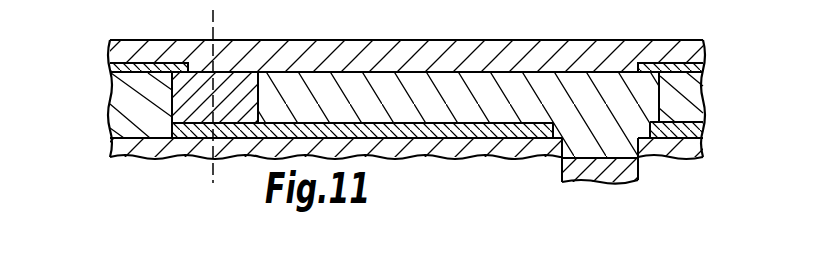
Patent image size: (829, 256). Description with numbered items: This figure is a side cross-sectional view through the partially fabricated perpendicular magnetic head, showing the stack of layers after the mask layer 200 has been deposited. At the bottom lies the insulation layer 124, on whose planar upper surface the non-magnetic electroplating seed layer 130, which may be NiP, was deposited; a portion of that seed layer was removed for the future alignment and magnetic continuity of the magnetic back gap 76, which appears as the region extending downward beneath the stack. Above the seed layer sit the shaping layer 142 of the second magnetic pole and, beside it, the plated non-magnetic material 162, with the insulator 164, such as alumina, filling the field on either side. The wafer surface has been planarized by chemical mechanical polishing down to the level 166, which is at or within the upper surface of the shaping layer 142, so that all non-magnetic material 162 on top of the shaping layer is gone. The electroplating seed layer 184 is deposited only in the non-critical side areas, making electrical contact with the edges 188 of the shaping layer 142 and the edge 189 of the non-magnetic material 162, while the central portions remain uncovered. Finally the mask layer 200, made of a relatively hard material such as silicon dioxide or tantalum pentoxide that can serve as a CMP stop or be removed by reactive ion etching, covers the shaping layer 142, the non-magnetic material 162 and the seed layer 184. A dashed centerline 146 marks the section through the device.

The mask layer 200 is at (373, 52).
The edge of the non-magnetic material 189 is at (172, 91).
The edges of the shaping layer 188 is at (661, 78).
The insulator 164 is at (125, 112).
The non-magnetic material 162 is at (230, 90).
The shaping layer 142 is at (447, 82).
The seed layer 130 is at (480, 133).
The insulation layer 124 is at (124, 150).
The magnetic back gap 76 is at (637, 176).
The electroplating seed layer 184 is at (161, 64).
The level 166 is at (608, 68).
The center line 146 is at (211, 168).